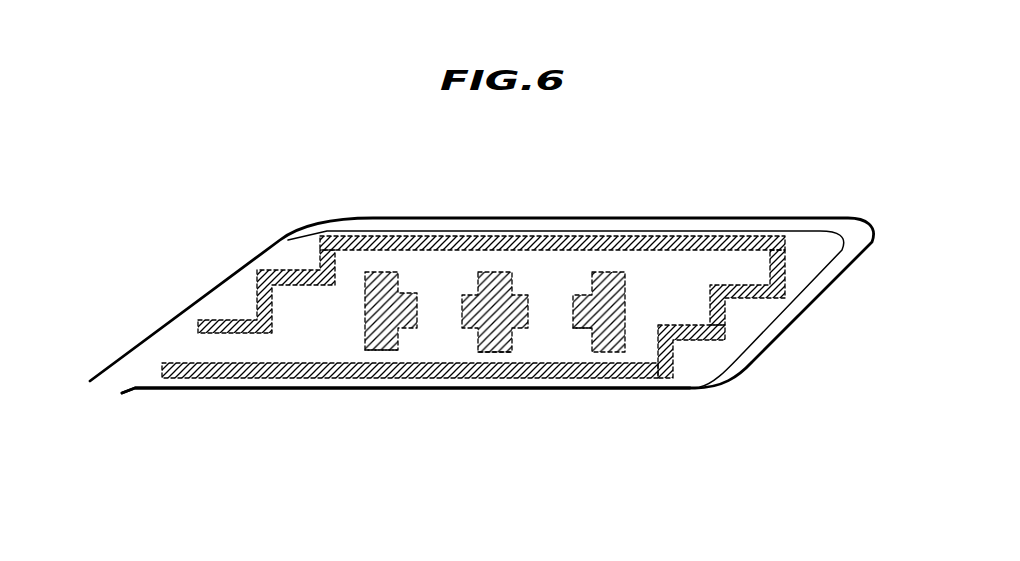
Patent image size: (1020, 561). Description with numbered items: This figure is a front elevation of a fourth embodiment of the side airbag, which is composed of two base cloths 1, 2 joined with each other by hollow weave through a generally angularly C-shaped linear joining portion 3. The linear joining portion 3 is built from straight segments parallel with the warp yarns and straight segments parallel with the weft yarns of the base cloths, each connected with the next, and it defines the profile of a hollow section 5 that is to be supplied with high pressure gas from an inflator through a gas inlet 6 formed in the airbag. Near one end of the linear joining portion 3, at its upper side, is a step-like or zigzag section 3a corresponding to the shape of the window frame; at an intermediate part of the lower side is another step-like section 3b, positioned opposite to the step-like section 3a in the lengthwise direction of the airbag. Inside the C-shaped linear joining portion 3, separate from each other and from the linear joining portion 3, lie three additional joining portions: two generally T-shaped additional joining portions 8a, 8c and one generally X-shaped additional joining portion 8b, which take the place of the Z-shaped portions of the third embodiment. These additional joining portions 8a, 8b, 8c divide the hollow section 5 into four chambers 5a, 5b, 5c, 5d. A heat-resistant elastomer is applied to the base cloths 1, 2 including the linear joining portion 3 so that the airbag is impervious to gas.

The base cloth 1 is at (777, 230).
The base cloth 2 is at (687, 216).
The linear joining portion 3 is at (746, 369).
The step-like section 3a is at (290, 270).
The step-like section 3b is at (700, 340).
The hollow section 5 is at (551, 262).
The chamber 5a is at (302, 343).
The chamber 5b is at (427, 343).
The chamber 5c is at (533, 343).
The chamber 5d is at (642, 343).
The gas inlet 6 is at (112, 383).
The additional joining portion 8a is at (375, 338).
The additional joining portion 8b is at (492, 337).
The additional joining portion 8c is at (585, 322).